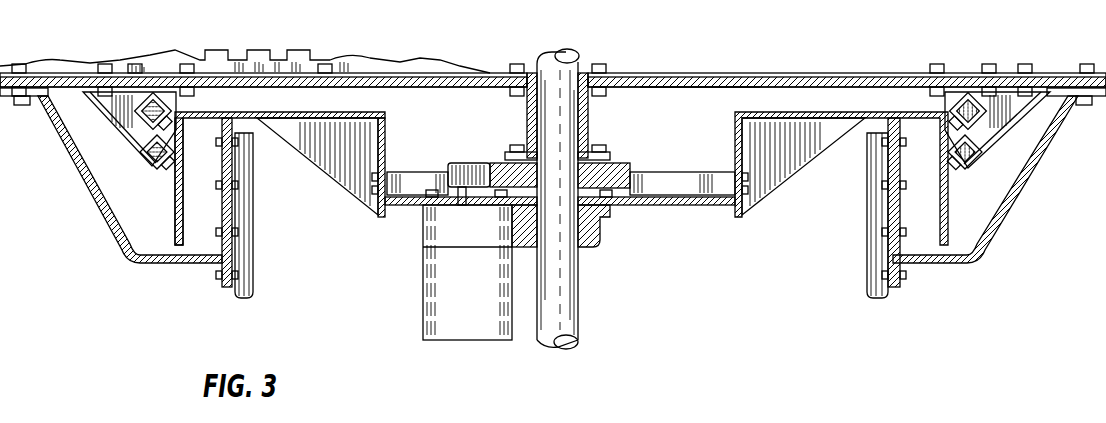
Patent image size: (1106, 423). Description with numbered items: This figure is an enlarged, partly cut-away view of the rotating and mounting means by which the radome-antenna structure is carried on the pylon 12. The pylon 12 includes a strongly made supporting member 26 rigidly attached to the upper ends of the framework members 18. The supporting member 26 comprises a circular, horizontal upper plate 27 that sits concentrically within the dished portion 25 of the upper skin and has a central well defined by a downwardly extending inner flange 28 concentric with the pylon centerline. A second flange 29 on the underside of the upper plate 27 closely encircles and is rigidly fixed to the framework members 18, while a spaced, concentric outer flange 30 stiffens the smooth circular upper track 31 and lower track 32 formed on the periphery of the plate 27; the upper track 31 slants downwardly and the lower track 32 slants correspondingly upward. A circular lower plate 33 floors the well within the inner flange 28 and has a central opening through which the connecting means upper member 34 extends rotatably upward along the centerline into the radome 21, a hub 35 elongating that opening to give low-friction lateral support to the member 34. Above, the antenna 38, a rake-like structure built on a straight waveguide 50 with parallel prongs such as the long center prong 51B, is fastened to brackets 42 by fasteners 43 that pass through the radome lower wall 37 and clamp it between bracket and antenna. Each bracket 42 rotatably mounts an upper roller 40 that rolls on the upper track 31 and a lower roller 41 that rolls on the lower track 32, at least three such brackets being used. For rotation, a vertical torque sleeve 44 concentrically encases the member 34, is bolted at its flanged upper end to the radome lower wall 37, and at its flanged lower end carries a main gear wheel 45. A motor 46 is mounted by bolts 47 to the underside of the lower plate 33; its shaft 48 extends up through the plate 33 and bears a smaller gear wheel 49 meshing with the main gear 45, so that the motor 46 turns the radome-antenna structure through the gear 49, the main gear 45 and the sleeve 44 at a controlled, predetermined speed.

The pylon 12 is at (97, 281).
The framework members 18 is at (254, 278).
The radome 21 is at (656, 95).
The dished portion 25 is at (78, 195).
The supporting member 26 is at (320, 183).
The upper plate 27 is at (338, 114).
The inner flange 28 is at (388, 136).
The second flange 29 is at (220, 208).
The outer flange 30 is at (176, 207).
The upper track 31 is at (975, 100).
The lower track 32 is at (976, 158).
The lower plate 33 is at (695, 207).
The connecting means upper member 34 is at (580, 310).
The hub 35 is at (602, 248).
The radome lower wall 37 is at (712, 88).
The antenna 38 is at (838, 73).
The upper roller 40 is at (157, 105).
The lower roller 41 is at (146, 155).
The bracket 42 is at (108, 120).
The fasteners 43 is at (938, 73).
The torque sleeve 44 is at (590, 118).
The main gear wheel 45 is at (614, 164).
The motor 46 is at (476, 301).
The bolts 47 is at (432, 182).
The shaft 48 is at (467, 200).
The gear wheel 49 is at (458, 163).
The waveguide 50 is at (804, 422).
The center prong 51B is at (415, 60).